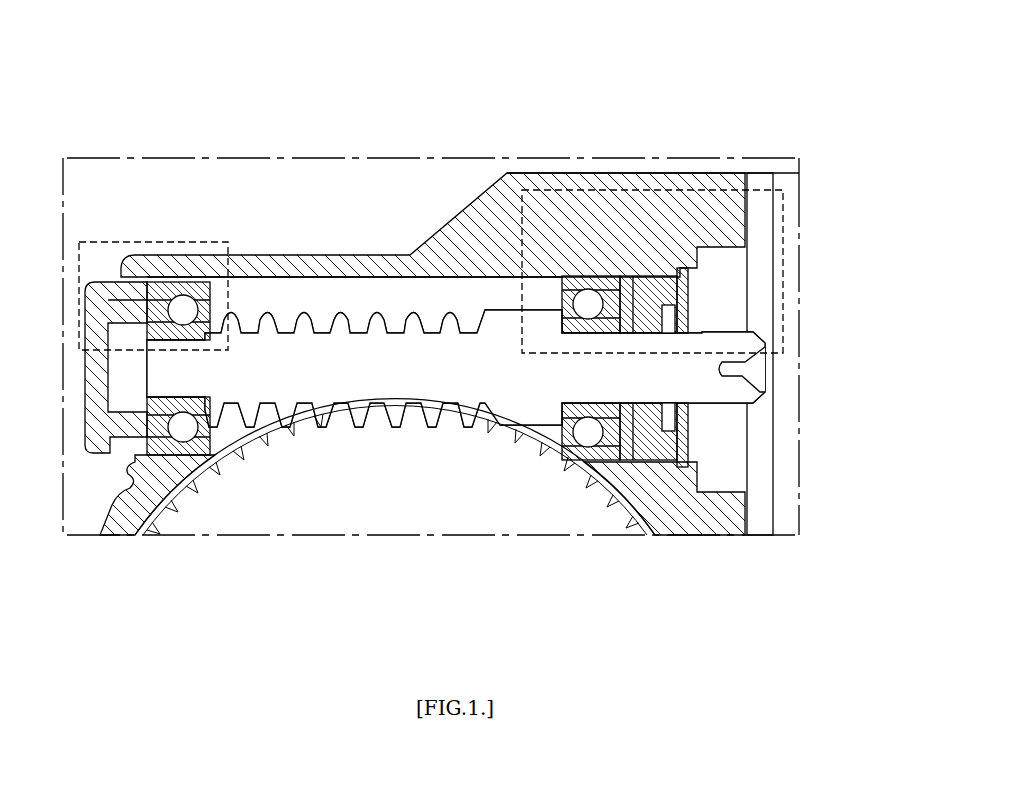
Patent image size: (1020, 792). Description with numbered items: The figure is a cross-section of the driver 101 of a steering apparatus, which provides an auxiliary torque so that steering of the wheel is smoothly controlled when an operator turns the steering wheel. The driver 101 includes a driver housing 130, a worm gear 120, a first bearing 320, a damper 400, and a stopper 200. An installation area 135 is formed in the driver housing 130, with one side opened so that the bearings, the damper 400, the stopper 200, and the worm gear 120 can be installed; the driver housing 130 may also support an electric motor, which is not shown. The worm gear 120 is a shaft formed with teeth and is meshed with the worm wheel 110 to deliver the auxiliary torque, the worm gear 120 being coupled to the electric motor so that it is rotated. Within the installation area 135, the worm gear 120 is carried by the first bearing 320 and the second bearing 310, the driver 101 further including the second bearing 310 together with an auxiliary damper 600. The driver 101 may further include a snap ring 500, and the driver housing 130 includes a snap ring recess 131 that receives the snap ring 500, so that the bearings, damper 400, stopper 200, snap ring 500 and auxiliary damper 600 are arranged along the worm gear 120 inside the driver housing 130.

The driver 101 is at (790, 51).
The worm wheel 110 is at (512, 505).
The worm gear 120 is at (378, 363).
The driver housing 130 is at (479, 232).
The snap ring recess 131 is at (683, 268).
The installation area 135 is at (378, 293).
The stopper 200 is at (657, 472).
The second bearing 310 is at (200, 458).
The first bearing 320 is at (580, 266).
The damper 400 is at (628, 277).
The snap ring 500 is at (686, 290).
The auxiliary damper 600 is at (132, 428).